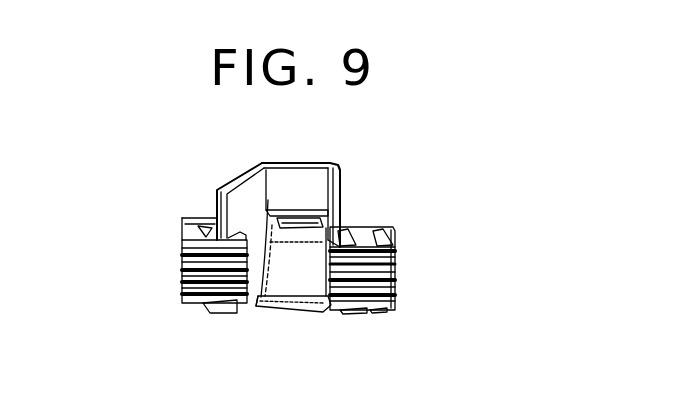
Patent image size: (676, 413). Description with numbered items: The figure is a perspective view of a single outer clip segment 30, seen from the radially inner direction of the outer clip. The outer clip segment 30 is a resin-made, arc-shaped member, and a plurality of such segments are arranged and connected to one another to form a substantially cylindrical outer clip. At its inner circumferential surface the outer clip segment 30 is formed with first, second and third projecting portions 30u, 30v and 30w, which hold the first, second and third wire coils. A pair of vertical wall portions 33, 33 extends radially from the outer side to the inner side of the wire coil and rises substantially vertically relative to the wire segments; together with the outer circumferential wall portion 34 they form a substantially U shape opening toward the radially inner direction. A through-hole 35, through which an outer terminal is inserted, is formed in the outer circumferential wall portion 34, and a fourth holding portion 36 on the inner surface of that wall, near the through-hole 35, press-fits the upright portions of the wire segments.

The outer clip segment 30 is at (346, 162).
The first projecting portion 30u is at (390, 253).
The second projecting portion 30v is at (388, 270).
The third projecting portion 30w is at (397, 292).
The vertical wall portion 33 is at (215, 213).
The outer circumferential wall portion 34 is at (290, 178).
The through-hole 35 is at (270, 205).
The fourth holding portion 36 is at (216, 208).